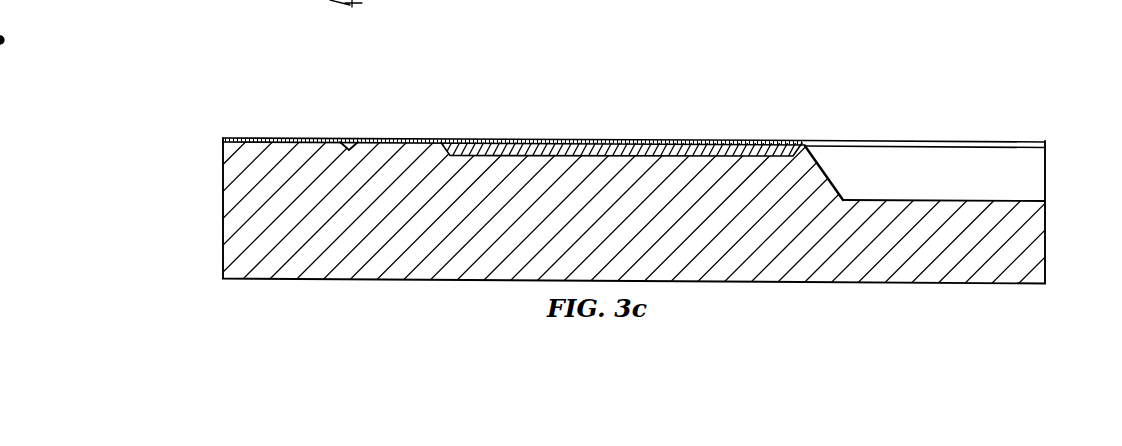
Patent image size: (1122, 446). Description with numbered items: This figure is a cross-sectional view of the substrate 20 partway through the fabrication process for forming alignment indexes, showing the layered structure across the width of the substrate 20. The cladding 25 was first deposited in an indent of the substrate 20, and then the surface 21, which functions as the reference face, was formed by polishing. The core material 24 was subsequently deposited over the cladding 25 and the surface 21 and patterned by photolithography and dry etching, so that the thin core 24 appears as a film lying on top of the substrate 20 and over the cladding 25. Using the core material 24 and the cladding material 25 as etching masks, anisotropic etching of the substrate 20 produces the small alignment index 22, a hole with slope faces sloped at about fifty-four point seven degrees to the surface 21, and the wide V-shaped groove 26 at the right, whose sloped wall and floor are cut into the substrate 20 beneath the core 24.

The substrate 20 is at (222, 208).
The surface 21 is at (240, 138).
The alignment indexes 22 is at (358, 148).
The core 24 is at (380, 138).
The cladding 25 is at (631, 148).
The V-shaped groove 26 is at (948, 177).